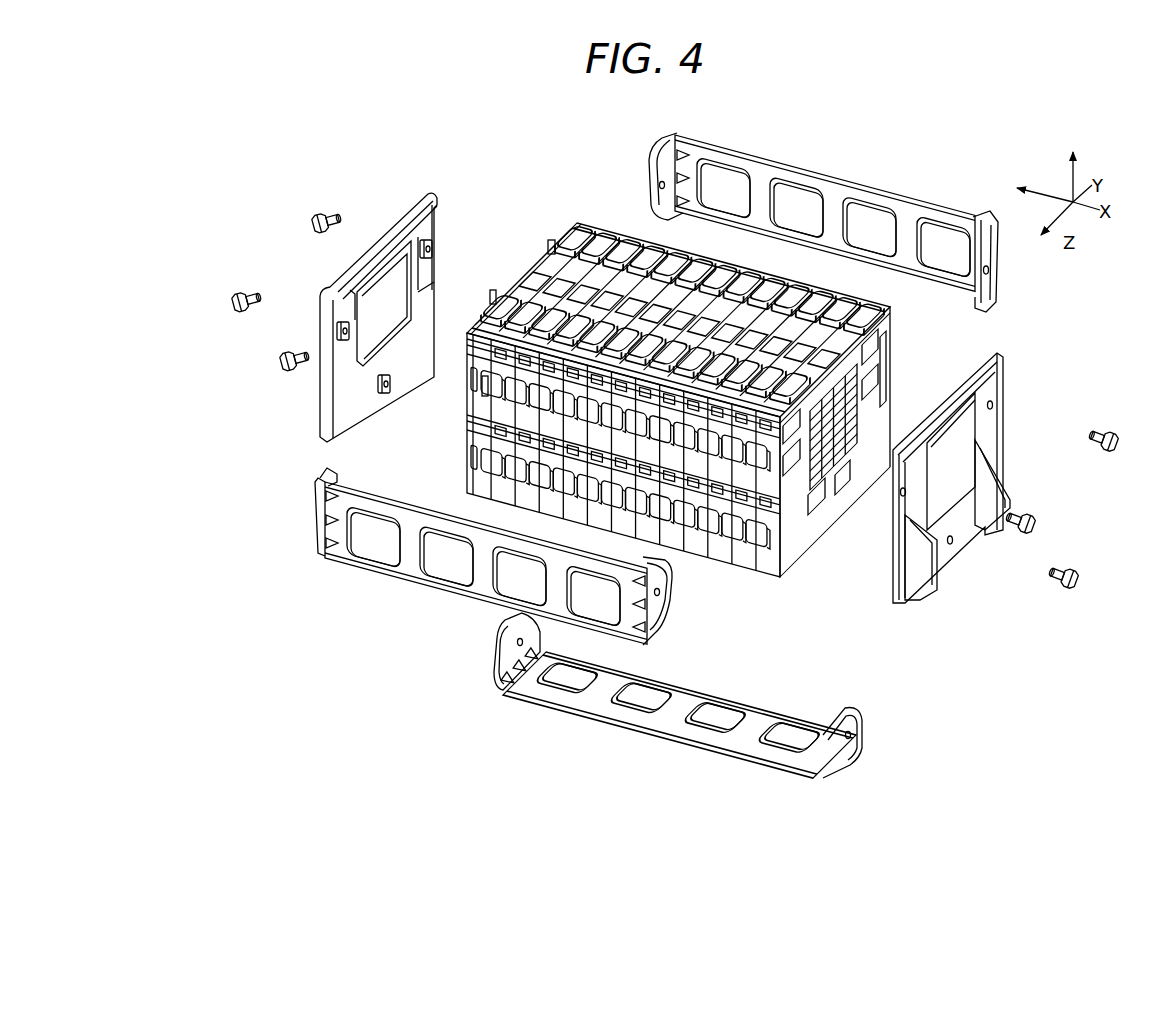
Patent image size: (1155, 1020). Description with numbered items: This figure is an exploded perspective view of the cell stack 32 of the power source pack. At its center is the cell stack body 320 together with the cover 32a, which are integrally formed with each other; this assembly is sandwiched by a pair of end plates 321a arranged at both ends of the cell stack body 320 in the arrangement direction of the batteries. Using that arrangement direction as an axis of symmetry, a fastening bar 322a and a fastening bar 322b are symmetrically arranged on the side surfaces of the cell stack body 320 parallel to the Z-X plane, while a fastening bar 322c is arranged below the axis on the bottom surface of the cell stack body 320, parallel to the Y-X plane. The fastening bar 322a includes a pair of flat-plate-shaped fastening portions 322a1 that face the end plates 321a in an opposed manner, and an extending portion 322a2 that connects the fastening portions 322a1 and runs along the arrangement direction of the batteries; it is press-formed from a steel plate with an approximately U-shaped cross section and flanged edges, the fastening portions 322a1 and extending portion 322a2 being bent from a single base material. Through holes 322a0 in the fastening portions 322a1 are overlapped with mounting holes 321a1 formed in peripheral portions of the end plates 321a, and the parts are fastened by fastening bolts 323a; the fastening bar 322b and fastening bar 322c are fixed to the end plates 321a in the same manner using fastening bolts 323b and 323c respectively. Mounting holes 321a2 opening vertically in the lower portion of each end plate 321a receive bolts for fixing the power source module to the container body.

The cell stack 32 is at (771, 109).
The cover 32a is at (678, 410).
The cell stack body 320 is at (555, 224).
The end plate 321a is at (358, 262).
The mounting hole 321a1 is at (433, 242).
The mounting hole 321a2 is at (998, 500).
The fastening bar 322a is at (533, 558).
The through hole 322a0 is at (661, 591).
The fastening portion 322a1 is at (336, 484).
The extending portion 322a2 is at (364, 562).
The fastening bar 322b is at (636, 182).
The fastening bar 322c is at (592, 730).
The fastening bolt 323a is at (256, 297).
The fastening bolt 323b is at (336, 217).
The fastening bolt 323c is at (297, 370).